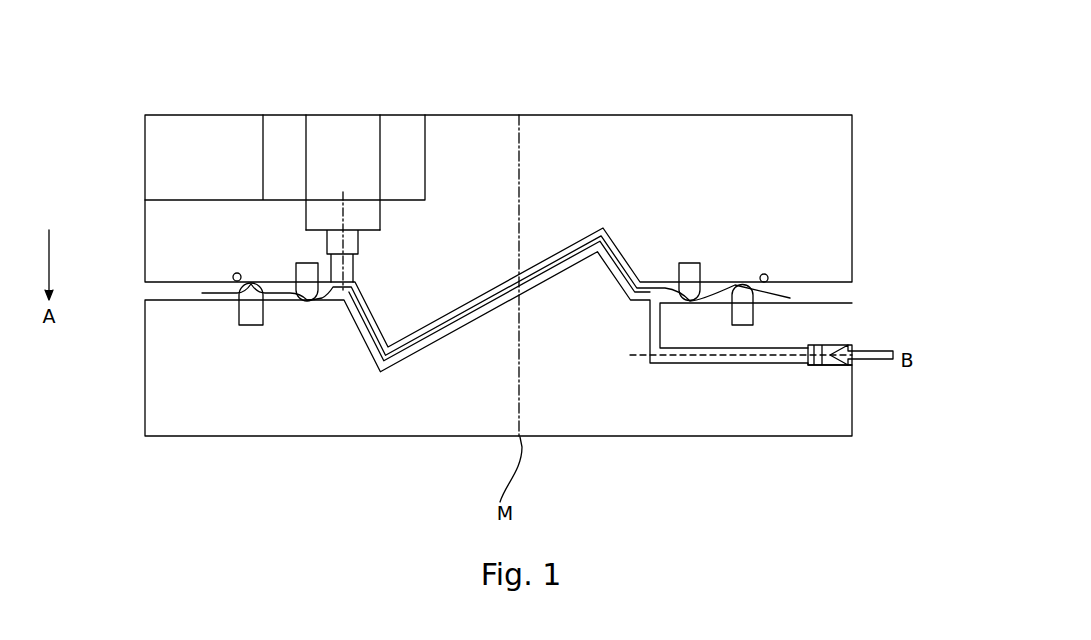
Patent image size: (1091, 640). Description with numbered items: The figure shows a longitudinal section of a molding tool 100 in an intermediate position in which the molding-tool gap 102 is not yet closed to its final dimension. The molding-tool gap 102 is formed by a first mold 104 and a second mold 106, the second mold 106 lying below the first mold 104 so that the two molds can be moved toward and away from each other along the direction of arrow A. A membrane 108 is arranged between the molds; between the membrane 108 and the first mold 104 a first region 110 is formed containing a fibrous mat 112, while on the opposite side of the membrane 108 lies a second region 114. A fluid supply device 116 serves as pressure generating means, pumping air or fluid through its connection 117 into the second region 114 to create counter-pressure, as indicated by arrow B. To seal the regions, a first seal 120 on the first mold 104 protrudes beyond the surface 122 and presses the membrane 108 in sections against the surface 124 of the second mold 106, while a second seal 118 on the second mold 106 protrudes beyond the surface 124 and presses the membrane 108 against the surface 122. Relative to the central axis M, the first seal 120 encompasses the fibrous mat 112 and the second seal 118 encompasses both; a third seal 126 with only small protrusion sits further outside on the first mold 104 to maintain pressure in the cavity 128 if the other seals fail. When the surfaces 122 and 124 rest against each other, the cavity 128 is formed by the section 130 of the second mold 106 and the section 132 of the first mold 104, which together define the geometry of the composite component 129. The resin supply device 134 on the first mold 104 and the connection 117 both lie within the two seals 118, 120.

The molding tool 100 is at (887, 58).
The molding-tool gap 102 is at (570, 211).
The first mold 104 is at (837, 172).
The second mold 106 is at (541, 375).
The membrane 108 is at (293, 305).
The first region 110 is at (465, 297).
The fibrous mat 112 is at (618, 226).
The second region 114 is at (437, 343).
The fluid supply device 116 is at (710, 355).
The connection 117 is at (645, 358).
The second seal 118 is at (253, 307).
The first seal 120 is at (307, 273).
The surface of the first mold 122 is at (838, 283).
The surface of the second mold 124 is at (838, 300).
The third seal 126 is at (234, 276).
The cavity 128 is at (571, 236).
The composite component 129 is at (390, 340).
The section of the second mold 130 is at (548, 280).
The section of the first mold 132 is at (538, 253).
The resin supply device 134 is at (343, 217).